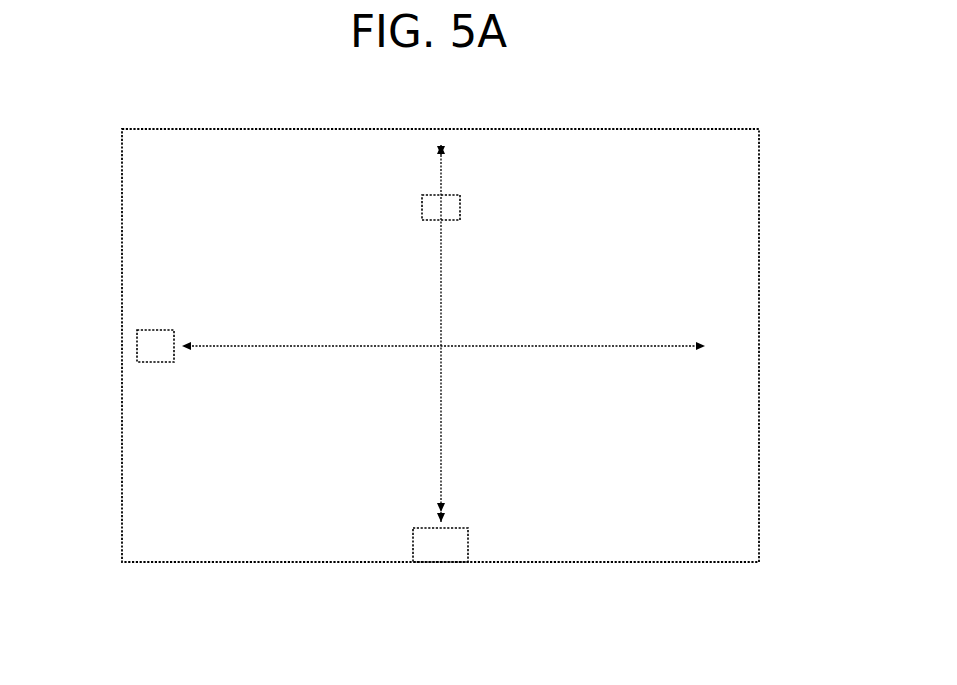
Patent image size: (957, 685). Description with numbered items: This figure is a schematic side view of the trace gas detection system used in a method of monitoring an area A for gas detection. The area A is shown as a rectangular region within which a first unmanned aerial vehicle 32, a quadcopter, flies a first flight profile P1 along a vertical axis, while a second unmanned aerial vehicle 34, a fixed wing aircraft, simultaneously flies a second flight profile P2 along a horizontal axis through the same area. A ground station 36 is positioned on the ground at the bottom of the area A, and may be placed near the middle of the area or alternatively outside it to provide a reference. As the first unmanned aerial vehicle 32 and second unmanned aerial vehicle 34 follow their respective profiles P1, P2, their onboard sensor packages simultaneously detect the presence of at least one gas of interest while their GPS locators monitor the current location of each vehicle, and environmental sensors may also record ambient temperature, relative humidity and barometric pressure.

The area A is at (759, 320).
The first unmanned aerial vehicle 32 is at (460, 207).
The second unmanned aerial vehicle 34 is at (152, 362).
The ground station 36 is at (447, 552).
The first flight profile P1 is at (441, 282).
The second flight profile P2 is at (565, 347).